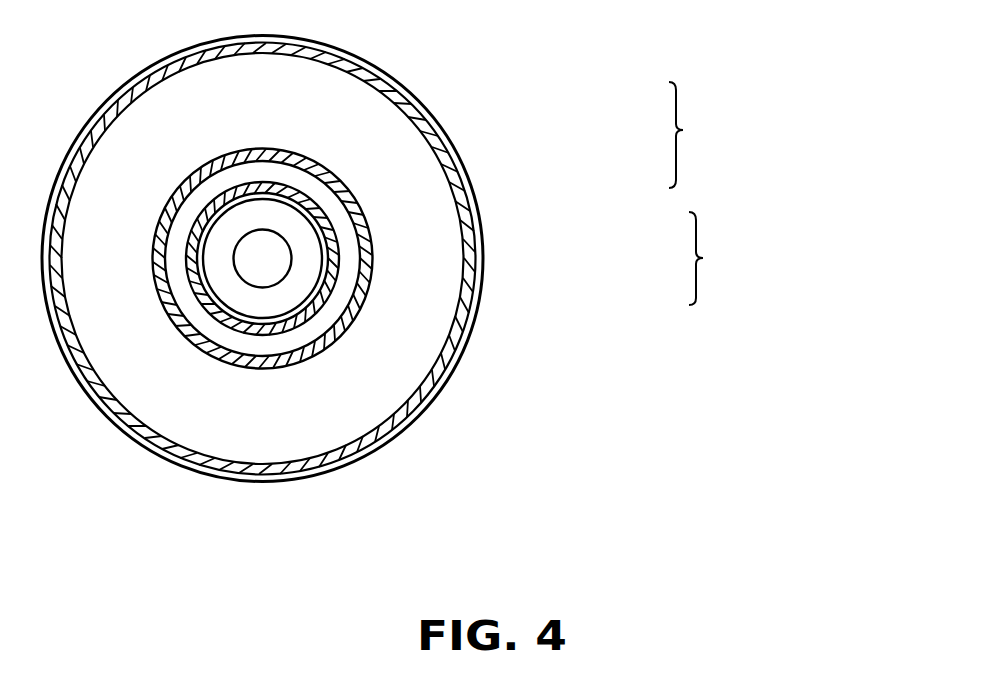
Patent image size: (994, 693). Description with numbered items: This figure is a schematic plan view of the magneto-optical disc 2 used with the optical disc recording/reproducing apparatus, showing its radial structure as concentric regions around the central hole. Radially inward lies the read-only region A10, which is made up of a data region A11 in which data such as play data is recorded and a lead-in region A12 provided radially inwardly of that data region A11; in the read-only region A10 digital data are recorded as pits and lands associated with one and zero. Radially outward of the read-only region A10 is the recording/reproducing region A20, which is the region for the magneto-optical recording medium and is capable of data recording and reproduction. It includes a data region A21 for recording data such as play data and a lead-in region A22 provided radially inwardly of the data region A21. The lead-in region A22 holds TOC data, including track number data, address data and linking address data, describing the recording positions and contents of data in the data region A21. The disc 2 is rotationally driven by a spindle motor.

The magneto-optical disc 2 is at (445, 413).
The lead-in region A12 is at (317, 205).
The data region A11 is at (337, 210).
The read-only region A10 is at (768, 135).
The lead-in region A22 is at (363, 229).
The data region A21 is at (415, 295).
The recording/reproducing region A20 is at (799, 258).